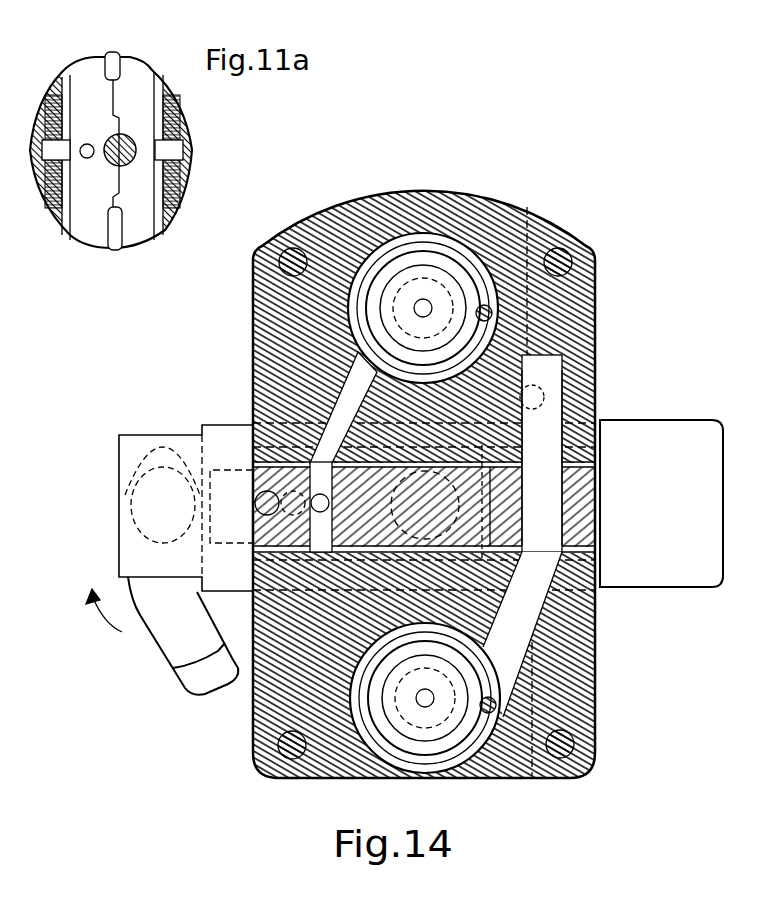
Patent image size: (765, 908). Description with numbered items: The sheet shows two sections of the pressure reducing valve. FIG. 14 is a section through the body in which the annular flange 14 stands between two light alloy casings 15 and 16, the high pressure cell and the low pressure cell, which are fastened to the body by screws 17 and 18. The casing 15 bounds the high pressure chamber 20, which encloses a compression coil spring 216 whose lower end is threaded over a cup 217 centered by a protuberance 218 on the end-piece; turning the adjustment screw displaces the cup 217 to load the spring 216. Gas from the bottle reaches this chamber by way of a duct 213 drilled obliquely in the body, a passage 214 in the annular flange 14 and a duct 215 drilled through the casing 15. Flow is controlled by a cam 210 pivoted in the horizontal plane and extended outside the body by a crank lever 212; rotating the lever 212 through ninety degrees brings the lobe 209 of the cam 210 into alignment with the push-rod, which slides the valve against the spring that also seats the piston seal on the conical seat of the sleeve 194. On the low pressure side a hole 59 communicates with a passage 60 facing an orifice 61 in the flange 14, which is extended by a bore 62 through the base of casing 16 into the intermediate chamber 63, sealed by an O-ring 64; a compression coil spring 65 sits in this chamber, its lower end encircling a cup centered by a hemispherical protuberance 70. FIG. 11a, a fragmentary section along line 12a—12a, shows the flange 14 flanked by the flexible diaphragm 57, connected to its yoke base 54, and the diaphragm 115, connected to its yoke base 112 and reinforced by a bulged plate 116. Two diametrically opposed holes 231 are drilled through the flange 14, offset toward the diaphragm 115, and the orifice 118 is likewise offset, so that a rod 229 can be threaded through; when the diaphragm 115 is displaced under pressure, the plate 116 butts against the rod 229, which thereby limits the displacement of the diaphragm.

In FIG. 11A, the section plane line 12a— 12a is at (112, 285).
In FIG. 11A, the base of yoke 112 is at (187, 192).
In FIG. 11A, the flexible diaphragm 57 is at (53, 97).
In FIG. 14, the flexible diaphragm 57 is at (390, 462).
In FIG. 11A, the base of yoke 54 is at (40, 186).
In FIG. 11A, the diaphragm 115 is at (177, 104).
In FIG. 14, the diaphragm 115 is at (380, 553).
In FIG. 11A, the bulged plate 116 is at (170, 103).
In FIG. 11A, the orifice 118 is at (90, 143).
In FIG. 11A, the diametrically opposed holes 231 is at (122, 135).
In FIG. 11A, the rod 229 is at (115, 158).
In FIG. 14, the casing 15 is at (527, 215).
In FIG. 14, the casing 16 is at (578, 672).
In FIG. 14, the annular flange 14 is at (575, 468).
In FIG. 14, the duct 215 is at (347, 387).
In FIG. 14, the passage 214 is at (313, 478).
In FIG. 14, the passage 60 is at (545, 357).
In FIG. 14, the orifice 61 is at (530, 506).
In FIG. 14, the hole 59 is at (562, 386).
In FIG. 14, the bore 62 is at (500, 628).
In FIG. 14, the compression coil spring 216 is at (457, 250).
In FIG. 14, the cup 217 is at (423, 308).
In FIG. 14, the protuberance 218 is at (423, 318).
In FIG. 14, the high pressure chamber 20 is at (358, 250).
In FIG. 14, the screws 17 is at (567, 258).
In FIG. 14, the compression coil spring 65 is at (367, 693).
In FIG. 14, the O-ring 64 is at (425, 698).
In FIG. 14, the hemispherical protuberance 70 is at (428, 700).
In FIG. 14, the intermediate chamber 63 is at (495, 727).
In FIG. 14, the screws 18 is at (572, 745).
In FIG. 14, the lobe 209 is at (163, 450).
In FIG. 14, the cam 210 is at (140, 491).
In FIG. 14, the duct 213 is at (262, 552).
In FIG. 14, the crank lever 212 is at (168, 642).
In FIG. 14, the sleeve 194 is at (648, 474).